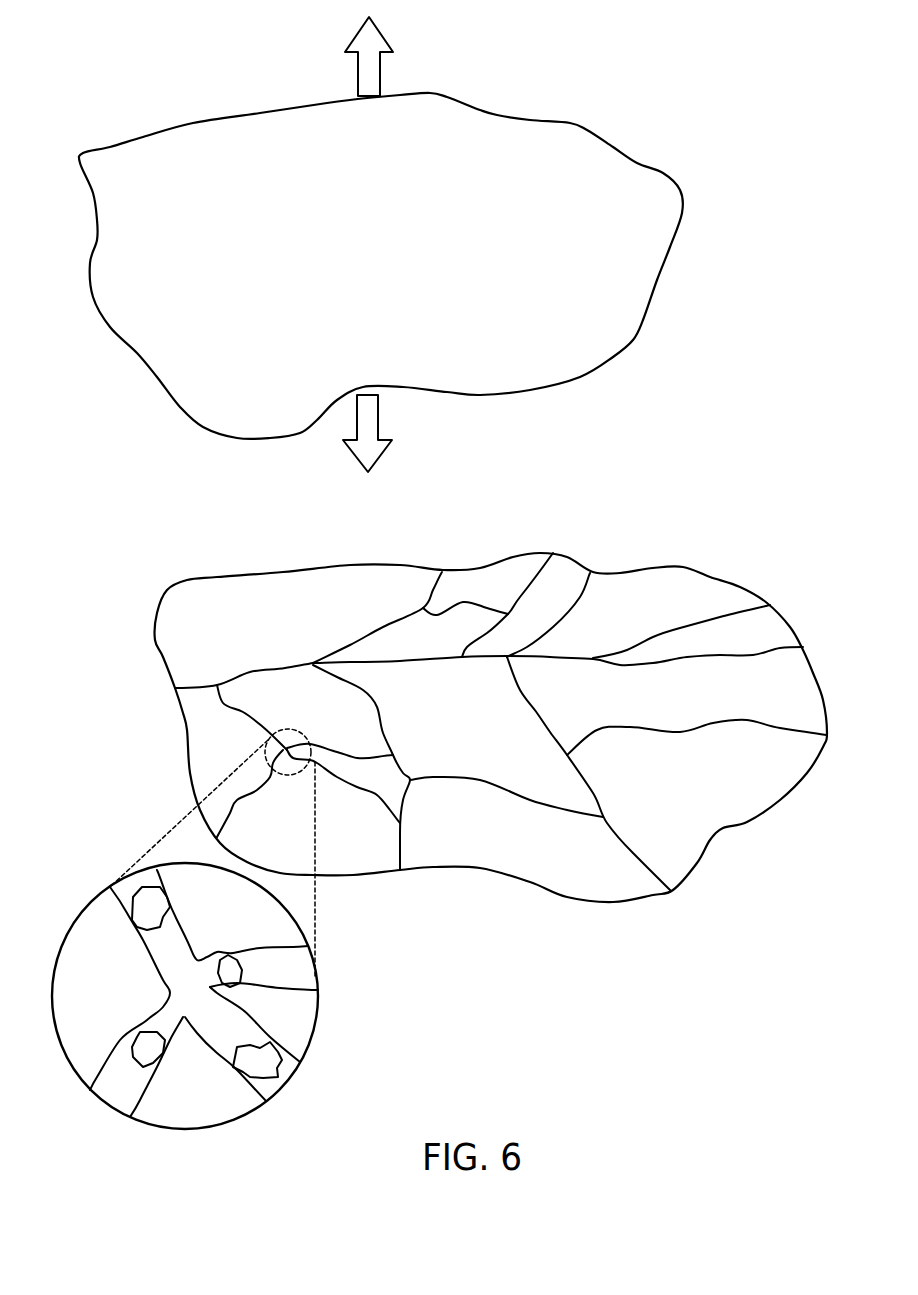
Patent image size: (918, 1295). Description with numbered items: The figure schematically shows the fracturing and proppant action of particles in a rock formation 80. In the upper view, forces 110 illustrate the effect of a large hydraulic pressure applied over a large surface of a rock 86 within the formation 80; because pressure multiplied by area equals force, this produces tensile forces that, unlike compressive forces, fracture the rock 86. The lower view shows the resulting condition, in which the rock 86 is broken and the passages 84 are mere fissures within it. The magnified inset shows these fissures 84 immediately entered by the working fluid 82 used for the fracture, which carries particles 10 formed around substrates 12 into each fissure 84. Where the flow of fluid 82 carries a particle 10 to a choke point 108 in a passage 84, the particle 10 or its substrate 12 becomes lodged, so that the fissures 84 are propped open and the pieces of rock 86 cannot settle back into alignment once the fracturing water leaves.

The particle 10 is at (273, 1069).
The substrate 12 is at (143, 913).
The formation 80 is at (134, 118).
The fluid 82 is at (193, 994).
The passages 84 is at (247, 672).
The rock 86 is at (383, 249).
The choke point 108 is at (173, 900).
The forces 110 is at (364, 75).